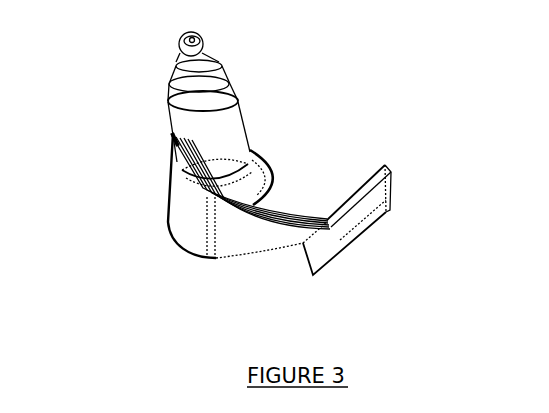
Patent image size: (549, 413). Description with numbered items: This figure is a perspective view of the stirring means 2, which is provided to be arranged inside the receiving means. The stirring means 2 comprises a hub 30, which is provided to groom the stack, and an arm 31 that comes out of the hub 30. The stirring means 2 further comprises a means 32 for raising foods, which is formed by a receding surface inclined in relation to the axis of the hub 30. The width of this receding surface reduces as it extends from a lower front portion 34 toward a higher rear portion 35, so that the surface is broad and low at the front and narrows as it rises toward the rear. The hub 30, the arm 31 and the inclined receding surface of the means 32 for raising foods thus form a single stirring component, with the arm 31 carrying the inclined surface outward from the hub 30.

The stirring means 2 is at (113, 193).
The hub 30 is at (228, 112).
The arm 31 is at (250, 238).
The means for raising foods 32 is at (388, 203).
The lower front portion 34 is at (311, 270).
The higher rear portion 35 is at (386, 165).